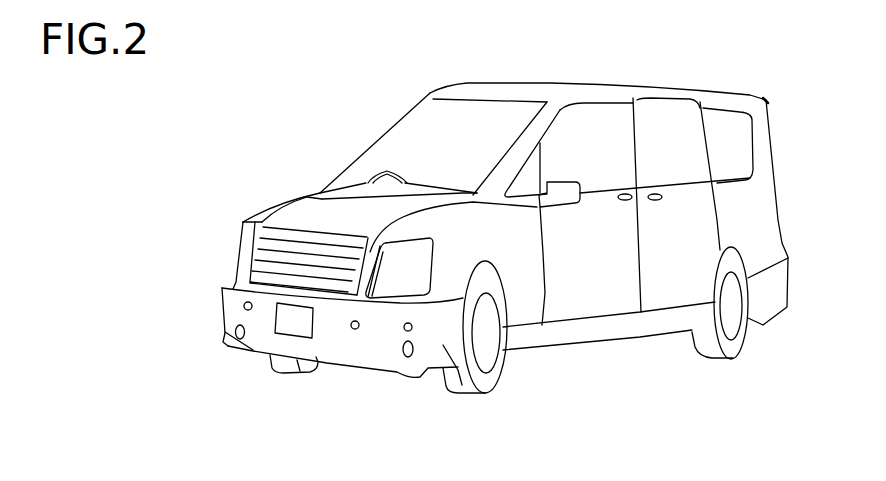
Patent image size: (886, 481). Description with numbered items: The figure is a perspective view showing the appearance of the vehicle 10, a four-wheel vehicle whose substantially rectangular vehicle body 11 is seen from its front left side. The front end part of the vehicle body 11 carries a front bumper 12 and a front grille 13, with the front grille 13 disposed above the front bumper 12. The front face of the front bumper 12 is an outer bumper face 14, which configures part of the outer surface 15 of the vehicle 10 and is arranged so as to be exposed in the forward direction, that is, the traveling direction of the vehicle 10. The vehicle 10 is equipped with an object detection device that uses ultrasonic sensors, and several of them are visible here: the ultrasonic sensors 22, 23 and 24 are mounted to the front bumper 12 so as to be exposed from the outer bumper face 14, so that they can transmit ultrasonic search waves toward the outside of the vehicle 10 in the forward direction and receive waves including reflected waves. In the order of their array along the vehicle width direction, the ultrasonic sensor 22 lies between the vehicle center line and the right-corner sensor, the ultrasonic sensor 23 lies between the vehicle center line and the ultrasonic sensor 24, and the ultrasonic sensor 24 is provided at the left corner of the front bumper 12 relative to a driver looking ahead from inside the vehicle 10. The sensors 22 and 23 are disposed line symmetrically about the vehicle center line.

The vehicle 10 is at (767, 89).
The vehicle body 11 is at (763, 216).
The front bumper 12 is at (443, 345).
The front grille 13 is at (267, 253).
The outer bumper face 14 is at (230, 298).
The outer surface 15 is at (527, 307).
The ultrasonic sensor 22 is at (250, 310).
The ultrasonic sensor 23 is at (353, 333).
The ultrasonic sensor 24 is at (413, 333).